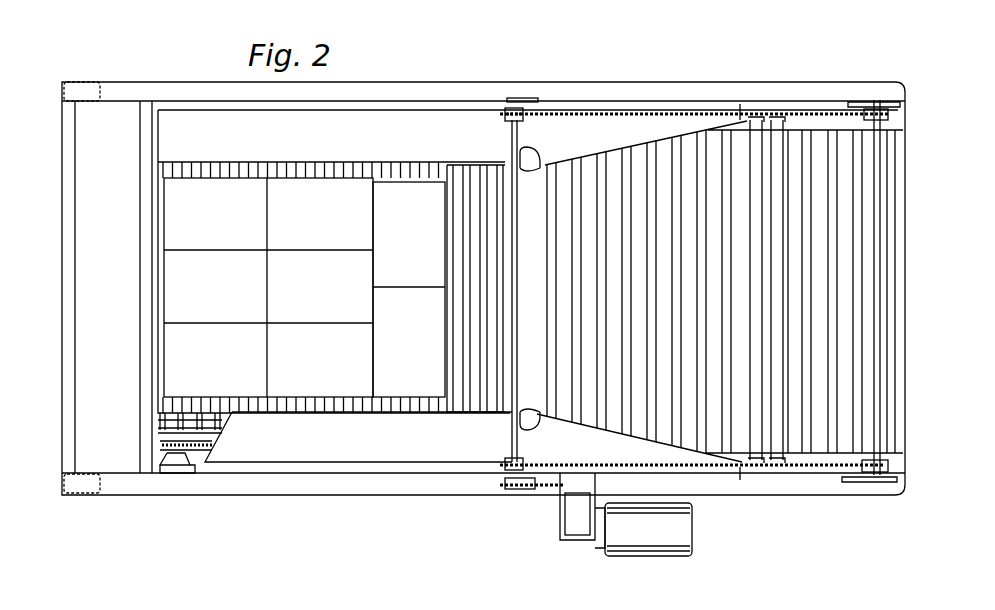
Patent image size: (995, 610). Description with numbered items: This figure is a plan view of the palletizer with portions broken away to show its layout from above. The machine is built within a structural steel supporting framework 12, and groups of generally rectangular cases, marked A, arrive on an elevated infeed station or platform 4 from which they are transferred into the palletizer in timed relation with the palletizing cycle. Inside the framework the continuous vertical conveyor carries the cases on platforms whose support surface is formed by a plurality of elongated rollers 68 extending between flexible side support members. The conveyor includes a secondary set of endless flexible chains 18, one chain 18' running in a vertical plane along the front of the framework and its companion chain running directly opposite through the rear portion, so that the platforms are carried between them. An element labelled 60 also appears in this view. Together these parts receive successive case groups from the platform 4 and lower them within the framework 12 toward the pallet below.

The infeed station or platform 4 is at (812, 140).
The structural steel supporting framework 12 is at (444, 79).
The secondary chains 18 is at (720, 290).
The secondary chain 18' is at (357, 313).
The transfer post with chain drive 60 is at (487, 313).
The elongated rollers 68 is at (447, 174).